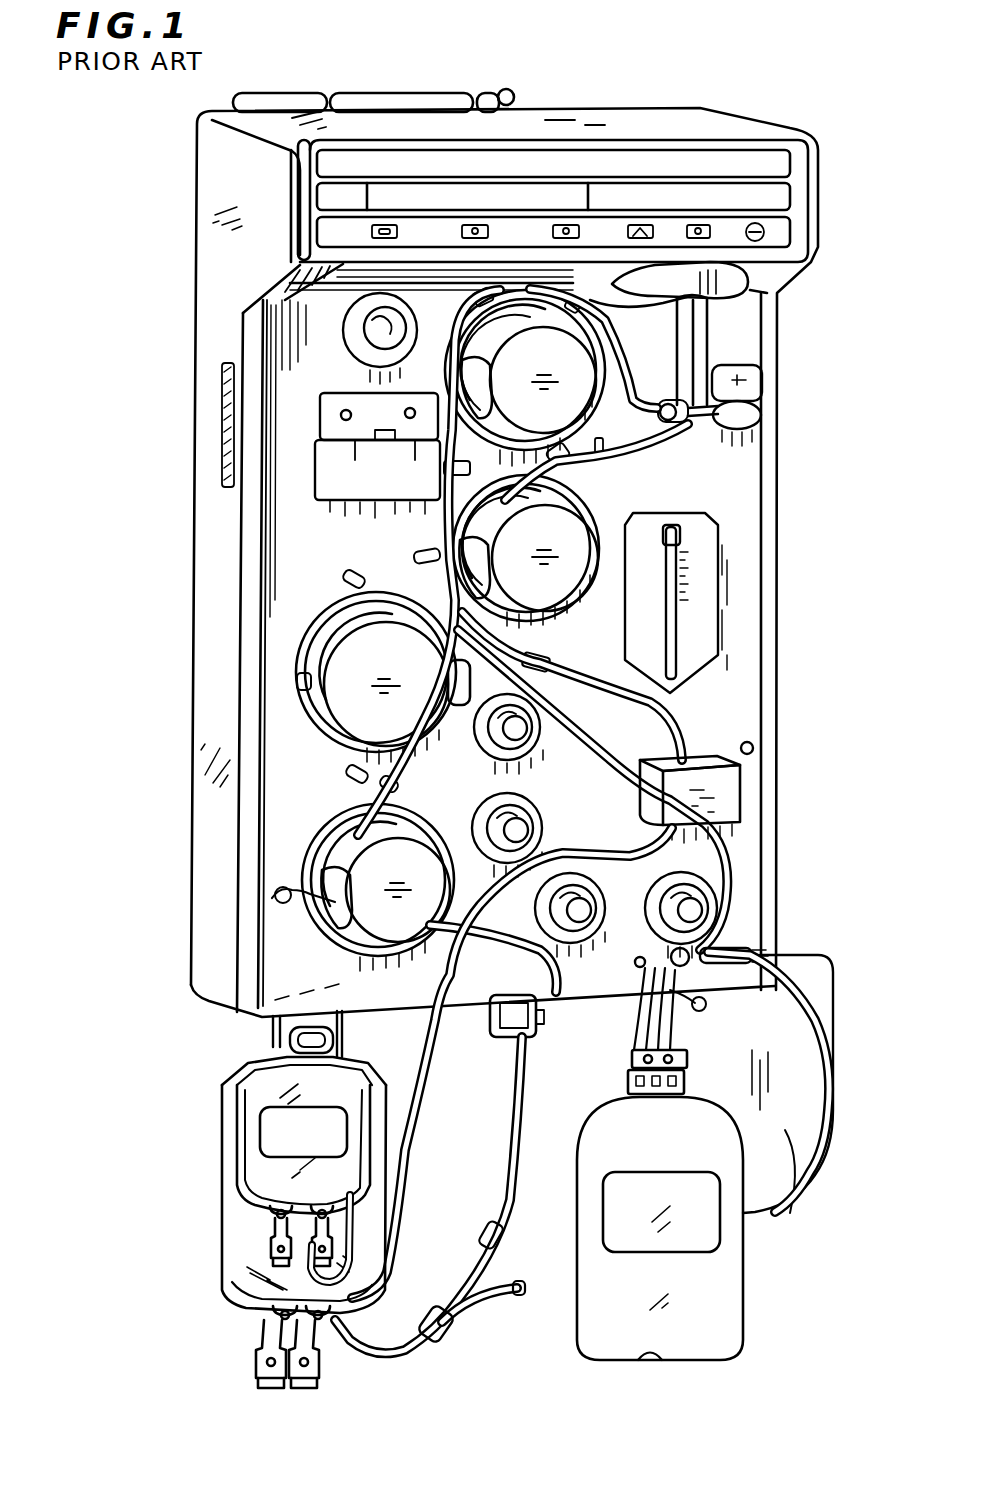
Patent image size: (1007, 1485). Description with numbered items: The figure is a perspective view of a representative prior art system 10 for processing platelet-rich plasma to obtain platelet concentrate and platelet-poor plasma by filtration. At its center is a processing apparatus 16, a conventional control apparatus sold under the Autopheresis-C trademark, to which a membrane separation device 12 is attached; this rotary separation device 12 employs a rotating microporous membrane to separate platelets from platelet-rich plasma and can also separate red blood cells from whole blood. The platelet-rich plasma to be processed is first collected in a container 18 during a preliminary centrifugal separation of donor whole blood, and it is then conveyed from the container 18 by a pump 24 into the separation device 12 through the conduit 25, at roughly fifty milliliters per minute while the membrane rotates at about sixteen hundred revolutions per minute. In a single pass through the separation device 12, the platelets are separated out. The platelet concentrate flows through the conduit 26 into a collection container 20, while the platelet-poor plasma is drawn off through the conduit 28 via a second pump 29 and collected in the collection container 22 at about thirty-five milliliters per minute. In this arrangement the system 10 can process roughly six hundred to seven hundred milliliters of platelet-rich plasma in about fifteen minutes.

The prior art system 10 is at (840, 280).
The membrane separation device 12 is at (705, 330).
The processing apparatus 16 is at (660, 127).
The container 18 is at (240, 1268).
The collection container 20 is at (713, 1283).
The collection container 22 is at (280, 1083).
The pump 24 is at (375, 868).
The conduit 25 is at (425, 776).
The conduit 26 is at (653, 397).
The conduit 28 is at (680, 737).
The pump 29 is at (565, 540).